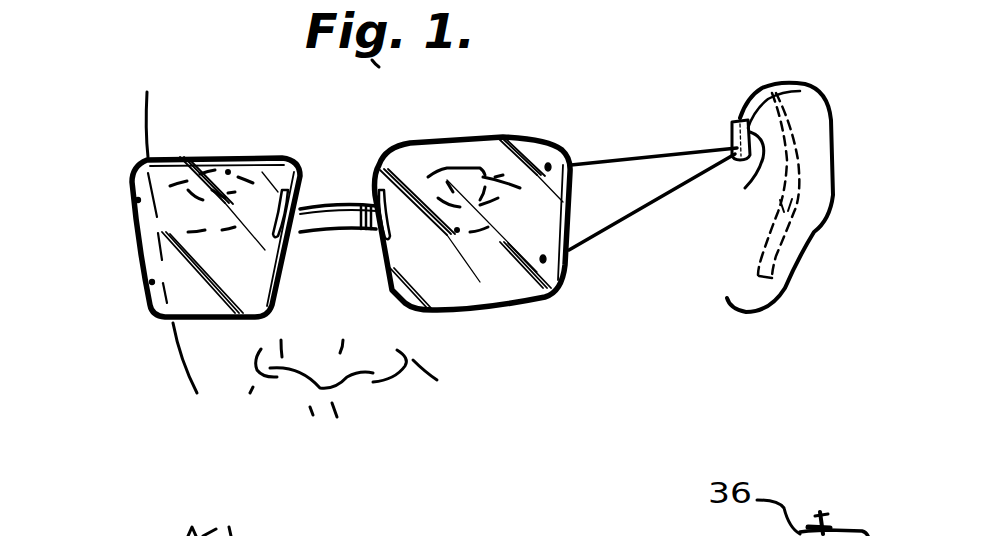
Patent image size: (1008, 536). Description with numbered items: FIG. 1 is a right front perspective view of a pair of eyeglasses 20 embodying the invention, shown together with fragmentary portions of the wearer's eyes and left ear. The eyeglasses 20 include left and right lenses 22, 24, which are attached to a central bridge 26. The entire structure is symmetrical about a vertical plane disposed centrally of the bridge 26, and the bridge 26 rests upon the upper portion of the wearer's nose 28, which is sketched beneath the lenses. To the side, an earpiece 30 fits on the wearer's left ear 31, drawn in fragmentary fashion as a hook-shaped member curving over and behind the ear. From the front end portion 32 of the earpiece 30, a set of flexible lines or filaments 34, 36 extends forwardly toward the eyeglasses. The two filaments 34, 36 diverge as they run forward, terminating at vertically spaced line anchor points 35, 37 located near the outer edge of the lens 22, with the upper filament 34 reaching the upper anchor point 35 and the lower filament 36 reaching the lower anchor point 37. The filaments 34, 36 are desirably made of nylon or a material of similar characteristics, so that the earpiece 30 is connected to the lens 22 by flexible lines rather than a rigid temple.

The pair of eyeglasses 20 is at (124, 246).
The left lens 22 is at (475, 150).
The right lens 24 is at (253, 167).
The central bridge 26 is at (342, 208).
The wearer's nose 28 is at (331, 244).
The earpiece 30 is at (760, 82).
The wearer's left ear 31 is at (800, 240).
The front end portion 32 is at (758, 162).
The filament 34 is at (653, 157).
The line anchor point 35 is at (548, 163).
The filament 36 is at (599, 233).
The line anchor point 37 is at (541, 263).